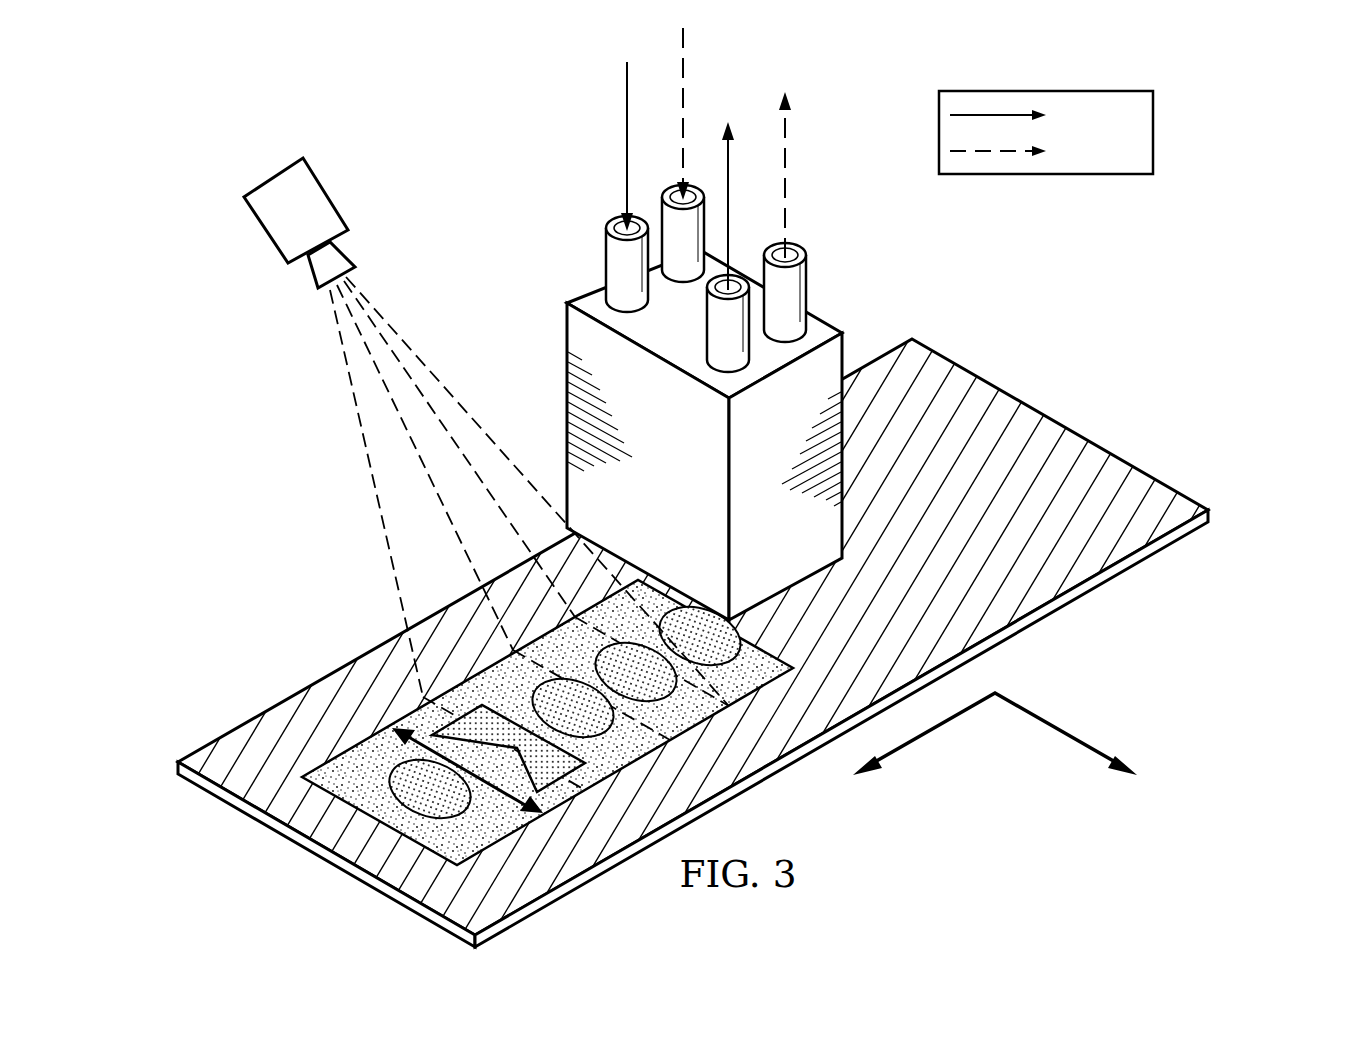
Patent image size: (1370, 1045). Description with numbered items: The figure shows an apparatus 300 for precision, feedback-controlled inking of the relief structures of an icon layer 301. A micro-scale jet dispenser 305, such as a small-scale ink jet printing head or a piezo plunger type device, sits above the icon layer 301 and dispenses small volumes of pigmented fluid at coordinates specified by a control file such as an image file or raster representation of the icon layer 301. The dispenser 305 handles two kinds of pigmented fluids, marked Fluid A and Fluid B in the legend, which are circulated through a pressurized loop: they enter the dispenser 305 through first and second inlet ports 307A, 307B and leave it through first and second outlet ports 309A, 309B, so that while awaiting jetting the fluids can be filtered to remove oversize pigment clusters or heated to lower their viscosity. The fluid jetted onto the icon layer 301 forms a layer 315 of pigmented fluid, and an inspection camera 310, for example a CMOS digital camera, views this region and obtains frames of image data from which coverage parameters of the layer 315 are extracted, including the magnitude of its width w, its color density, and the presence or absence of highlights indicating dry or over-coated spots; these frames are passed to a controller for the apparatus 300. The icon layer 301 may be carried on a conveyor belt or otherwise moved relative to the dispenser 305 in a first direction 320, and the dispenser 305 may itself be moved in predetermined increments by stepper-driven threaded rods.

The apparatus 300 is at (679, 489).
The icon layer 301 is at (1052, 432).
The micro-scale jet dispenser 305 is at (702, 324).
The first inlet port 307A is at (606, 265).
The second inlet port 307B is at (661, 210).
The first outlet port 309A is at (700, 318).
The second outlet port 309B is at (806, 295).
The inspection camera 310 is at (278, 180).
The layer of pigmented fluid 315 is at (505, 840).
The first direction 320 is at (1053, 698).